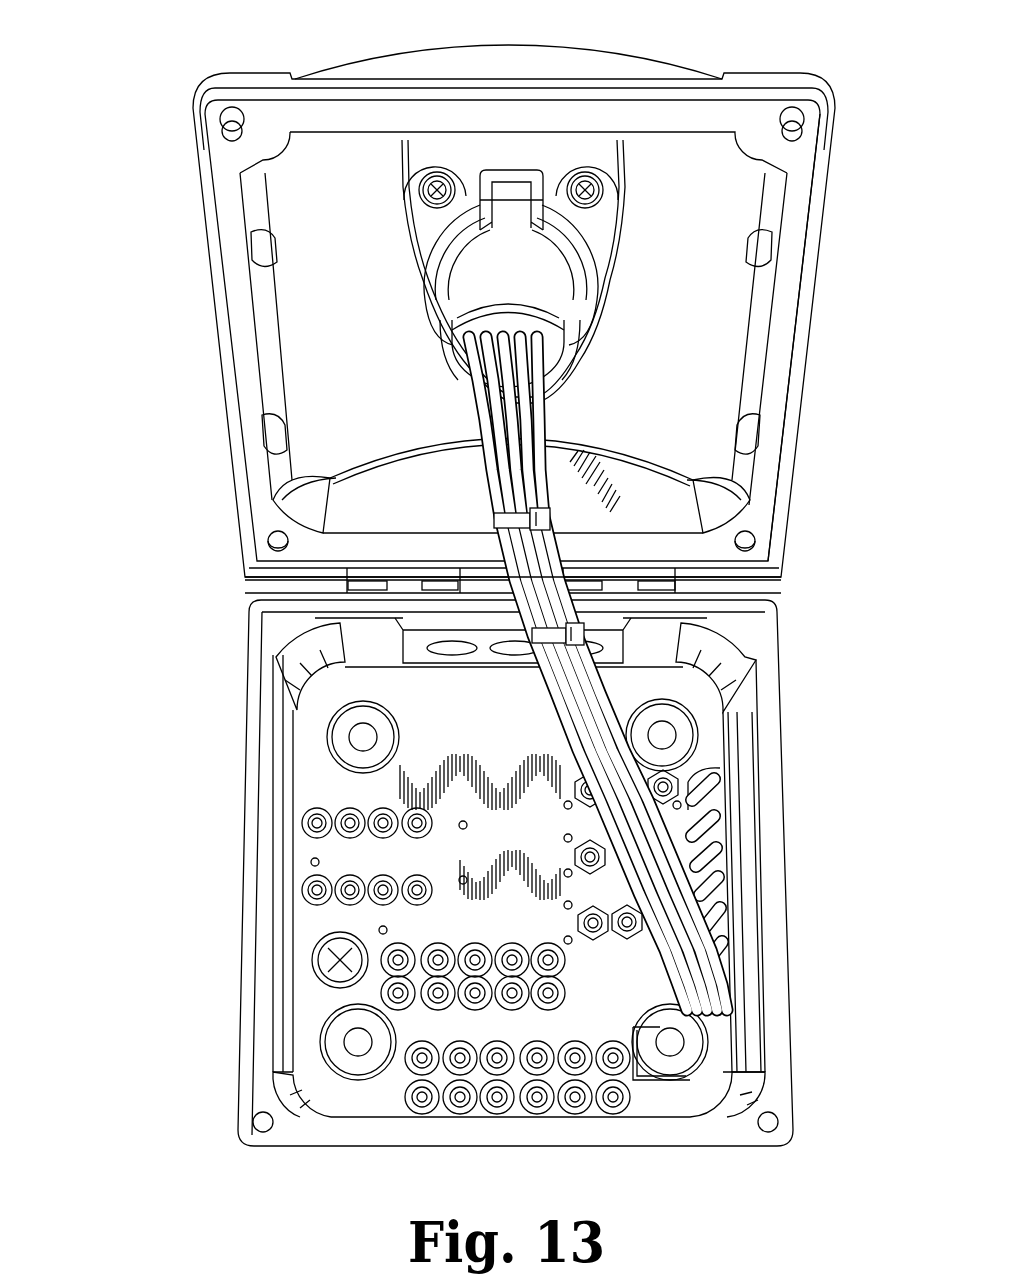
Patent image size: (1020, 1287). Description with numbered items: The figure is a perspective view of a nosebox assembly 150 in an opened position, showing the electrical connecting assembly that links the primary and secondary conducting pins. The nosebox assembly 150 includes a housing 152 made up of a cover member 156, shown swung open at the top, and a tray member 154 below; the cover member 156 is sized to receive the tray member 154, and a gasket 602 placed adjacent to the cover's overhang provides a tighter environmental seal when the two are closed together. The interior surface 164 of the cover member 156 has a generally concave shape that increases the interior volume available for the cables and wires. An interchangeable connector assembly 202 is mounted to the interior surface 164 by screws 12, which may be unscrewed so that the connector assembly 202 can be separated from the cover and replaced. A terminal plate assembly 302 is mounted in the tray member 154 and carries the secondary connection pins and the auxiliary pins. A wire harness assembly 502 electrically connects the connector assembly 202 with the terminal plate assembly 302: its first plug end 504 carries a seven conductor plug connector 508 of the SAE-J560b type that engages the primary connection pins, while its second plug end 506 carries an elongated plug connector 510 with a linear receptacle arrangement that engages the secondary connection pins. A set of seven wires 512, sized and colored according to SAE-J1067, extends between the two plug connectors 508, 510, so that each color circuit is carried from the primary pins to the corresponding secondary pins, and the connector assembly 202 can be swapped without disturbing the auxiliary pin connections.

The screws 12 is at (424, 192).
The nosebox assembly 150 is at (128, 522).
The housing 152 is at (170, 458).
The tray member 154 is at (781, 738).
The cover member 156 is at (785, 505).
The interior surface 164 is at (706, 390).
The interchangeable connector assembly 202 is at (638, 292).
The terminal plate assembly 302 is at (330, 788).
The wire harness assembly 502 is at (476, 481).
The first plug end 504 is at (426, 365).
The second plug end 506 is at (792, 914).
The plug connector 508 is at (556, 375).
The plug connector 510 is at (733, 868).
The set of seven wires 512 is at (540, 722).
The gasket 602 is at (445, 116).